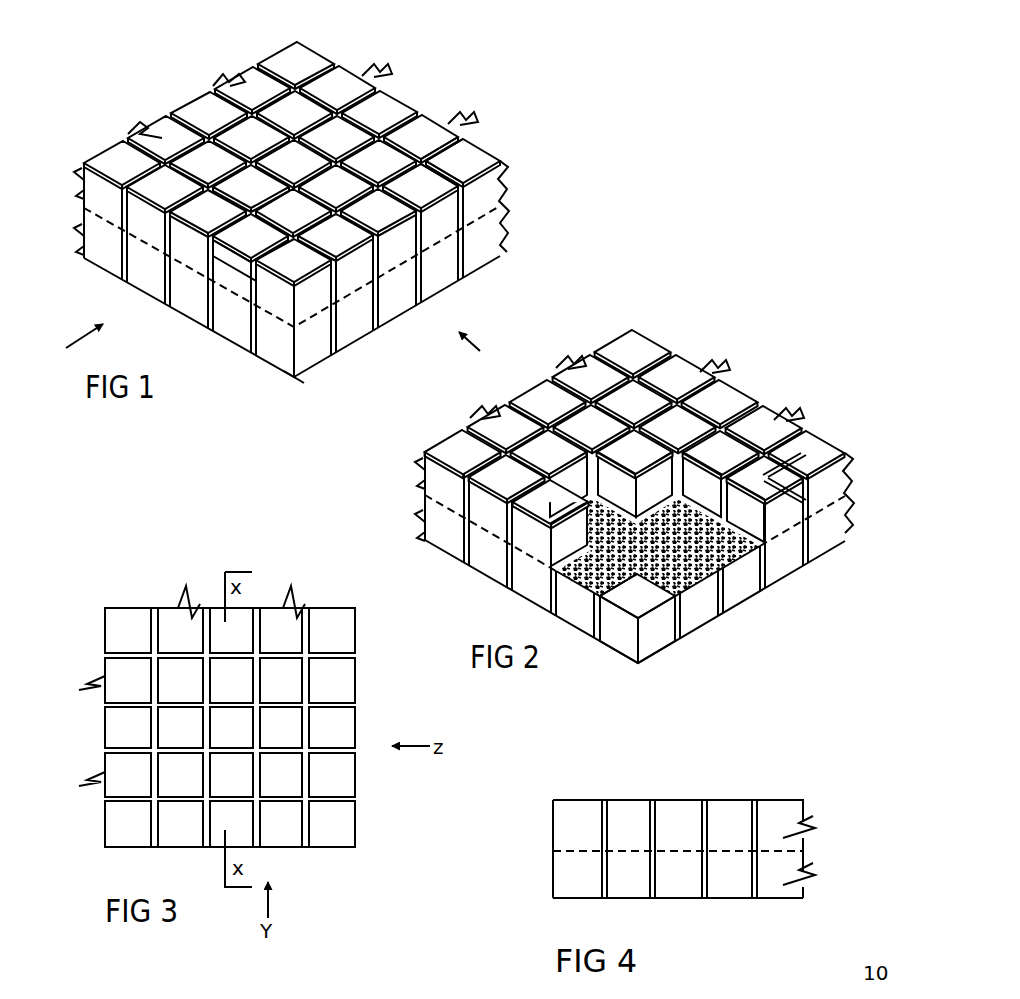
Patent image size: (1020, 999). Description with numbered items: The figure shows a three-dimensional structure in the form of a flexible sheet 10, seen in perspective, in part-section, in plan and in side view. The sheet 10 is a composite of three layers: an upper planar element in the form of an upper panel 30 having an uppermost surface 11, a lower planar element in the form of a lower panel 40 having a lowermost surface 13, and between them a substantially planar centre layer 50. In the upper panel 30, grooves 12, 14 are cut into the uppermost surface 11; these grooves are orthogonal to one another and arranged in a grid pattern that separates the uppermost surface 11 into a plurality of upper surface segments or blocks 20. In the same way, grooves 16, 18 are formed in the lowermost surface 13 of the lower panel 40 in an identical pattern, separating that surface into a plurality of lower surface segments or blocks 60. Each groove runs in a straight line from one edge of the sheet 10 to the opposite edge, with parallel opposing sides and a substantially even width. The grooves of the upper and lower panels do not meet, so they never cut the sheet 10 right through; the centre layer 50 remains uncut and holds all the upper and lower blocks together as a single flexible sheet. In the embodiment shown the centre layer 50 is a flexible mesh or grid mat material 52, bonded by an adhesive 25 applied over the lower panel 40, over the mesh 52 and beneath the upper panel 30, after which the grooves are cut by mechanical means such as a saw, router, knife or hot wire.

In FIG. 1, the flexible sheet 10 is at (162, 50).
In FIG. 2, the flexible sheet 10 is at (686, 312).
In FIG. 3, the flexible sheet 10 is at (172, 600).
In FIG. 4, the flexible sheet 10 is at (560, 786).
In FIG. 1, the uppermost surface 11 is at (390, 80).
In FIG. 1, the groove 12 is at (466, 133).
In FIG. 2, the groove 12 is at (796, 426).
In FIG. 3, the groove 12 is at (310, 607).
In FIG. 1, the lowermost surface 13 is at (297, 396).
In FIG. 1, the groove 14 is at (452, 165).
In FIG. 2, the groove 14 is at (797, 466).
In FIG. 3, the groove 14 is at (331, 695).
In FIG. 4, the groove 14 is at (704, 800).
In FIG. 1, the groove 16 is at (378, 346).
In FIG. 2, the groove 16 is at (722, 600).
In FIG. 4, the groove 16 is at (656, 900).
In FIG. 1, the groove 18 is at (167, 313).
In FIG. 2, the groove 18 is at (471, 566).
In FIG. 1, the upper surface segment or block 20 is at (420, 130).
In FIG. 2, the upper surface segment or block 20 is at (716, 400).
In FIG. 3, the upper surface segment or block 20 is at (241, 632).
In FIG. 4, the upper surface segment or block 20 is at (626, 800).
In FIG. 2, the adhesive 25 is at (585, 594).
In FIG. 1, the upper panel 30 is at (70, 172).
In FIG. 2, the upper panel 30 is at (426, 472).
In FIG. 1, the lower panel 40 is at (70, 249).
In FIG. 2, the lower panel 40 is at (426, 526).
In FIG. 1, the centre layer 50 is at (441, 264).
In FIG. 2, the centre layer 50 is at (816, 520).
In FIG. 4, the centre layer 50 is at (729, 848).
In FIG. 2, the flexible mesh material 52 is at (576, 548).
In FIG. 1, the lower surface segment or block 60 is at (236, 346).
In FIG. 2, the lower surface segment or block 60 is at (619, 640).
In FIG. 4, the lower surface segment or block 60 is at (574, 900).